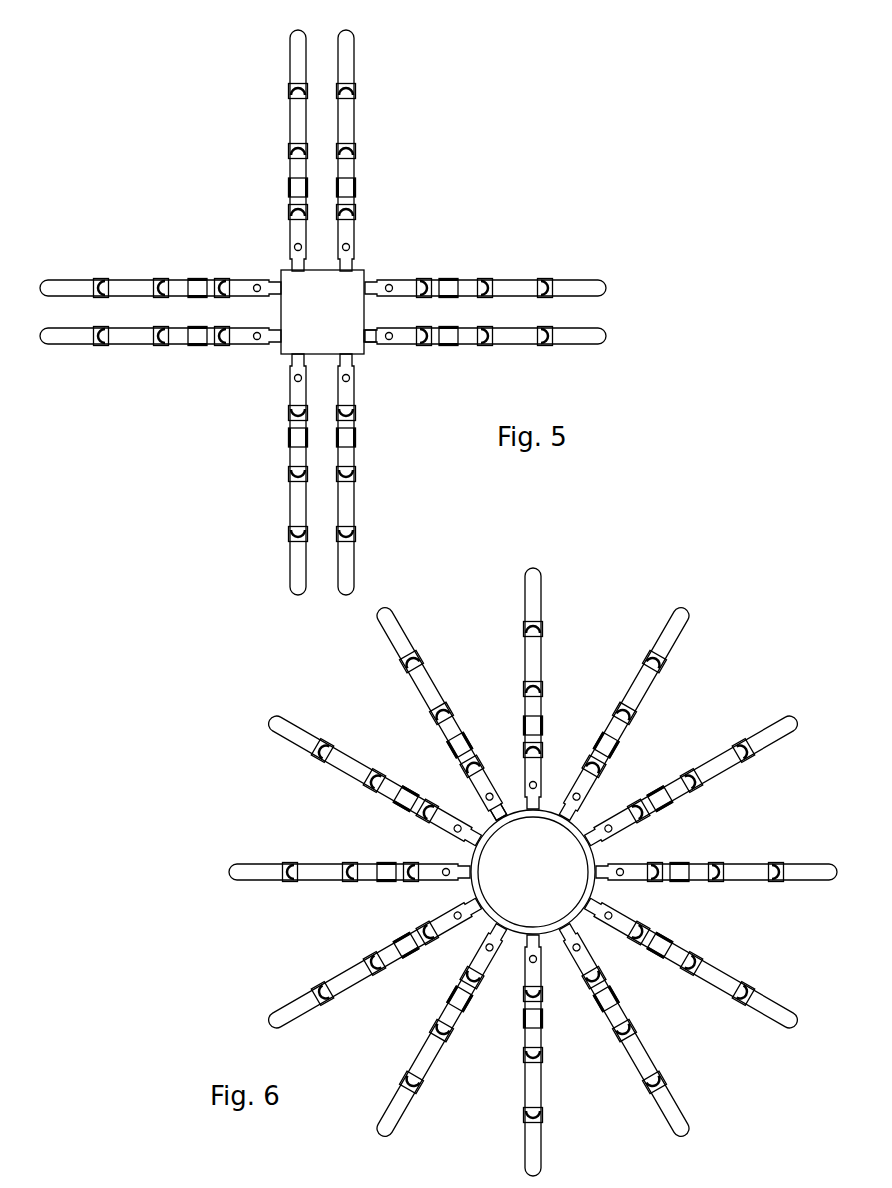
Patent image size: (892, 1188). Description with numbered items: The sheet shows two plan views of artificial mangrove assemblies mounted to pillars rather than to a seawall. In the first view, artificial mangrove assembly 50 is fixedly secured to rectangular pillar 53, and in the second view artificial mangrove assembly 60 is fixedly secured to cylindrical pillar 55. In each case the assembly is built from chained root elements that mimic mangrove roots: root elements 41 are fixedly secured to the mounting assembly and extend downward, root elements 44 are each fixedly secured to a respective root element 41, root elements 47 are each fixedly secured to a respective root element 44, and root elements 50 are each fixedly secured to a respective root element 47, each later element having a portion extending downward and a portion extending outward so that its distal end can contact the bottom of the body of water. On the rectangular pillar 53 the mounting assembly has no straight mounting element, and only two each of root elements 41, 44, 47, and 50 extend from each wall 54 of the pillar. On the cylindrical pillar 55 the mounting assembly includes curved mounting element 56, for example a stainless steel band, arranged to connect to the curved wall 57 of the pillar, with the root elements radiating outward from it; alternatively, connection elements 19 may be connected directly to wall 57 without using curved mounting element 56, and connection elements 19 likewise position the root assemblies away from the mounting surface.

In FIG. 5, the root element 50 is at (70, 278).
In FIG. 6, the root element 50 is at (255, 857).
In FIG. 5, the root element 47 is at (133, 278).
In FIG. 6, the root element 47 is at (316, 862).
In FIG. 5, the root element 44 is at (178, 278).
In FIG. 6, the root element 44 is at (372, 862).
In FIG. 5, the root element 41 is at (221, 278).
In FIG. 6, the root element 41 is at (403, 886).
In FIG. 5, the connection element 19 is at (247, 345).
In FIG. 6, the connection element 19 is at (430, 862).
In FIG. 5, the rectangular pillar 53 is at (365, 268).
In FIG. 5, the wall 54 is at (364, 354).
In FIG. 6, the artificial mangrove assembly 60 is at (617, 578).
In FIG. 6, the cylindrical pillar 55 is at (583, 816).
In FIG. 6, the curved mounting element 56 is at (508, 807).
In FIG. 6, the wall 57 is at (572, 912).